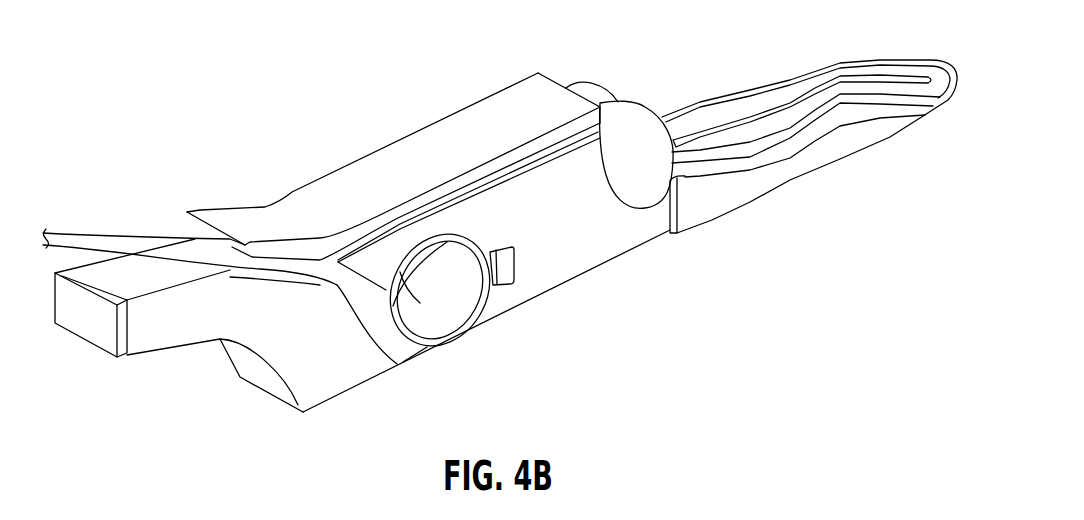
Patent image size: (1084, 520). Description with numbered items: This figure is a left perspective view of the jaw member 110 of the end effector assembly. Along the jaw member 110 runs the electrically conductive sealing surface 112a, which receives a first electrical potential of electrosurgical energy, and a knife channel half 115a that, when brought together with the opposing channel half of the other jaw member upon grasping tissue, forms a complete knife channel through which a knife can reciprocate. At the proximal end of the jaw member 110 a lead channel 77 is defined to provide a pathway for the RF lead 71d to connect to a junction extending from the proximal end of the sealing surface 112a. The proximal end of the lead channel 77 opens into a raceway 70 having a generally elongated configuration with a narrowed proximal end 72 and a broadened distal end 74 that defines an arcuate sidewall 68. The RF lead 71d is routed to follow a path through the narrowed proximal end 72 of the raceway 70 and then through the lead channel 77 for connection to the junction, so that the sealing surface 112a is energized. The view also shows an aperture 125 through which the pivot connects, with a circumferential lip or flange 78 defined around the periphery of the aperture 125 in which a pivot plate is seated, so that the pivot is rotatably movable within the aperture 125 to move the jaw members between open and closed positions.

The raceway 70 is at (216, 244).
The RF lead 71d is at (131, 249).
The narrowed proximal end 72 is at (275, 278).
The broadened distal end 74 is at (378, 343).
The arcuate sidewall 68 is at (390, 367).
The circumferential lip or flange 78 is at (413, 302).
The aperture 125 is at (457, 282).
The lead channel 77 is at (562, 153).
The electrically conductive sealing surface 112a is at (744, 101).
The knife channel half 115a is at (870, 82).
The jaw member 110 is at (778, 126).